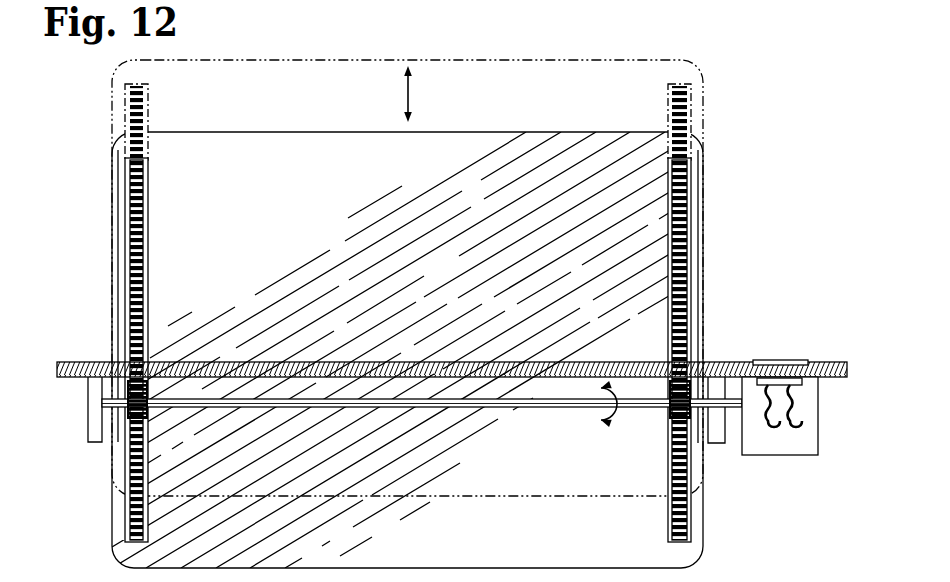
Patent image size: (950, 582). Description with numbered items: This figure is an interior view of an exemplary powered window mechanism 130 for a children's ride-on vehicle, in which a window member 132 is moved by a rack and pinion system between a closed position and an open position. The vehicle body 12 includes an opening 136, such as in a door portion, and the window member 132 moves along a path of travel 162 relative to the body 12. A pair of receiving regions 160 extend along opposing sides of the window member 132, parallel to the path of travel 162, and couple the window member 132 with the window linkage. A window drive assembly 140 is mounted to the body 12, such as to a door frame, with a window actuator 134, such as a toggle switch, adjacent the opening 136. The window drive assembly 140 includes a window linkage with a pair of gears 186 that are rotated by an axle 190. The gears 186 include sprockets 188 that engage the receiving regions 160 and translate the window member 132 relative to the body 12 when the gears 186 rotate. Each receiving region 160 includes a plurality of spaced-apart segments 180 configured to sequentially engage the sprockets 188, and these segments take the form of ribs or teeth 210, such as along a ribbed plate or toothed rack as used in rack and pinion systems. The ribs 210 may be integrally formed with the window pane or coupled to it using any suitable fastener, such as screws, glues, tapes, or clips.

The body 12 is at (77, 359).
The powered window mechanism 130 is at (769, 269).
The window member 132 is at (481, 128).
The window actuator 134 is at (763, 357).
The opening 136 is at (123, 360).
The window drive assembly 140 is at (785, 459).
The receiving regions 160 is at (123, 207).
The path of travel 162 is at (403, 95).
The spaced-apart segments 180 is at (693, 255).
The gears 186 is at (138, 423).
The sprockets 188 is at (691, 413).
The axle 190 is at (563, 411).
The ribs or teeth 210 is at (684, 303).